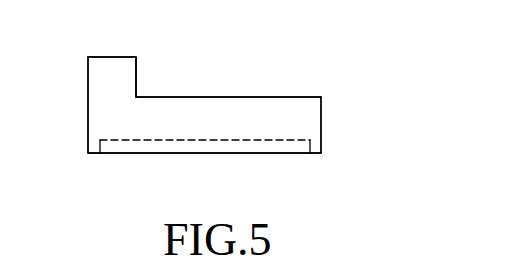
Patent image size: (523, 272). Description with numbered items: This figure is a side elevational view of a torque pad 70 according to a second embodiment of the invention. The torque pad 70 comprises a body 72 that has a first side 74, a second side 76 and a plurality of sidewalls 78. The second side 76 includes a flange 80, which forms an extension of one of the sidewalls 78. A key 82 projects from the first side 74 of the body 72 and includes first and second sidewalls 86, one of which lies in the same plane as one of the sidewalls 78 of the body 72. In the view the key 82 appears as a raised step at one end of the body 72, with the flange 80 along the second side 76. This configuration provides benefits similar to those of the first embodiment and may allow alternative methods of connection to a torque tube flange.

The torque pad 70 is at (302, 79).
The body 72 is at (299, 118).
The first side 74 is at (212, 97).
The second side 76 is at (148, 140).
The sidewalls 78 is at (321, 142).
The flange 80 is at (92, 153).
The key 82 is at (114, 72).
The first and second sidewalls 86 is at (88, 87).